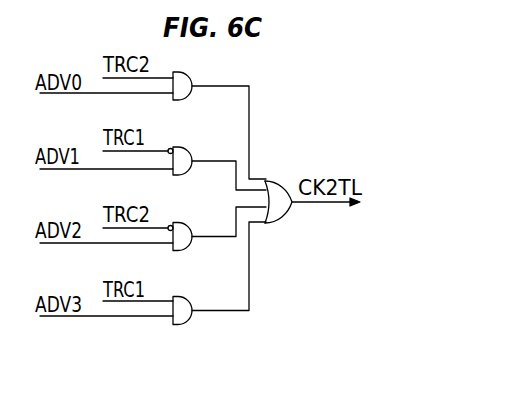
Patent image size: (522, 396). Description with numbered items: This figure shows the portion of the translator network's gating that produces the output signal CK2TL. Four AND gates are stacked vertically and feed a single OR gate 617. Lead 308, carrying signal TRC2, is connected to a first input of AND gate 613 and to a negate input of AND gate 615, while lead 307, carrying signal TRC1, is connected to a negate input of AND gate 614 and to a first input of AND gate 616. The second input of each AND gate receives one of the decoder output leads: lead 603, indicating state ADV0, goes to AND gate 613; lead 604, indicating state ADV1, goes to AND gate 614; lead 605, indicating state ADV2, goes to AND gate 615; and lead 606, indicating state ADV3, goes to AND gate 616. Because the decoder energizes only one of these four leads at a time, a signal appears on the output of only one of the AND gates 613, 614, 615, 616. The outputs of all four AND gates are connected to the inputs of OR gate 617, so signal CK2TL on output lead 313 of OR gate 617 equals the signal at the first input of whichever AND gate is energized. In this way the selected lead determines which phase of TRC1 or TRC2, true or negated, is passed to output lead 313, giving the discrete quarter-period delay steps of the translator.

The output lead 307 is at (160, 151).
The output lead 308 is at (160, 78).
The output lead 313 is at (318, 205).
The lead 603 is at (104, 95).
The lead 604 is at (110, 171).
The lead 605 is at (106, 245).
The lead 606 is at (110, 318).
The AND gate 613 is at (187, 74).
The AND gate 614 is at (187, 149).
The AND gate 615 is at (187, 224).
The AND gate 616 is at (187, 298).
The OR gate 617 is at (284, 214).